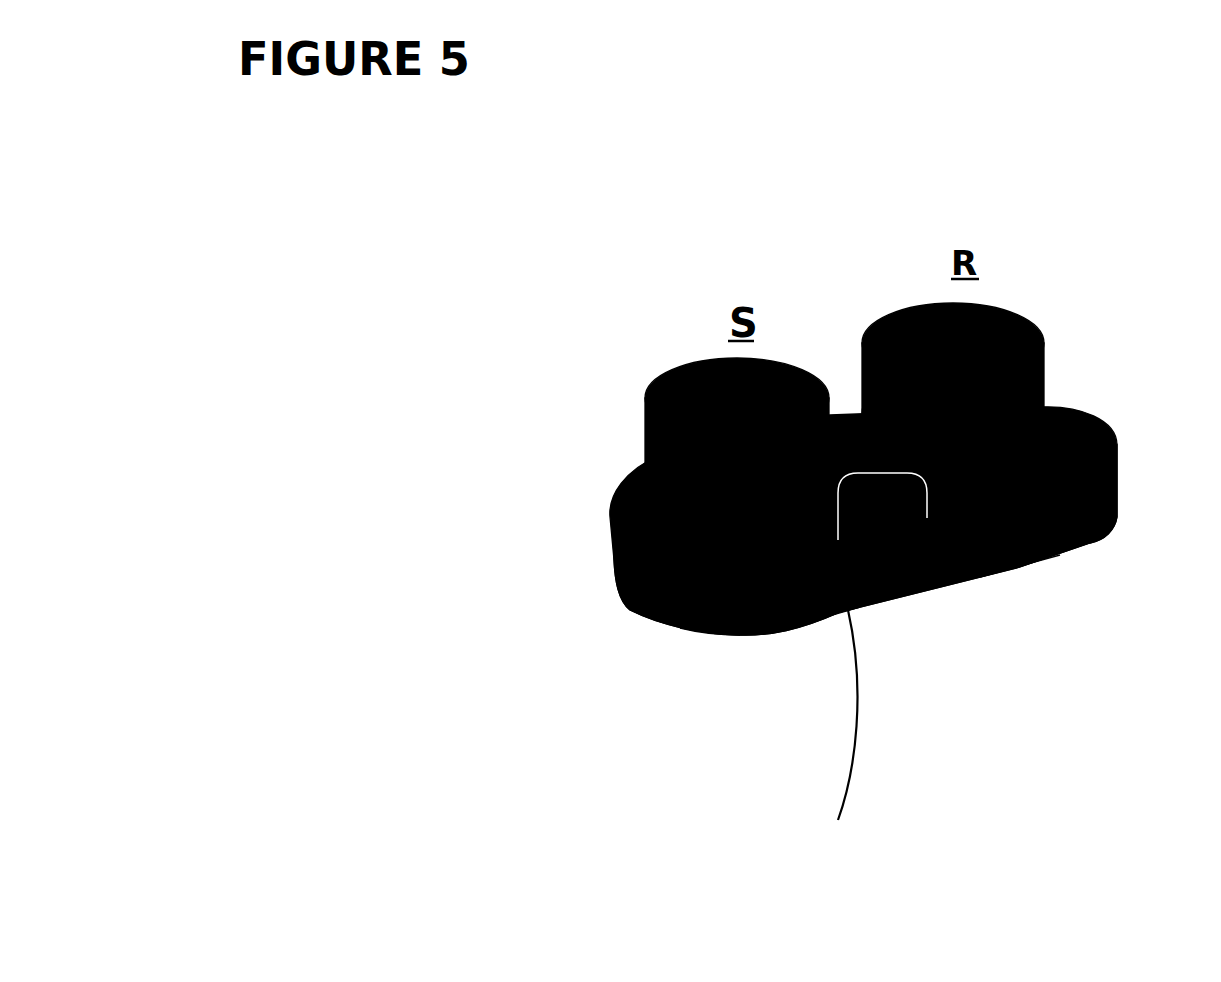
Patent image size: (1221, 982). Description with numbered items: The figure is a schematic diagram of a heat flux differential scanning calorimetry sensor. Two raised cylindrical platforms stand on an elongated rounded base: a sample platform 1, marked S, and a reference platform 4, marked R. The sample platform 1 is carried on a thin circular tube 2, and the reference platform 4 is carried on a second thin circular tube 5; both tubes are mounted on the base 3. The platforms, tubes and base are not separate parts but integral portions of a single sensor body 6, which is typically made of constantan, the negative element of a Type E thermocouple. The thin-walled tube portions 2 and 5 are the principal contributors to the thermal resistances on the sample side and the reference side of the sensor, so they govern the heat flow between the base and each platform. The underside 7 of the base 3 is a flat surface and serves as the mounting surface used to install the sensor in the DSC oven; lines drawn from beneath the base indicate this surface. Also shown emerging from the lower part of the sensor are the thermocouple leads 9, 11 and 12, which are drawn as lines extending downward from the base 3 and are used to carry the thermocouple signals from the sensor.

The sample platform 1 is at (697, 363).
The thin circular tube 2 is at (647, 456).
The base 3 is at (630, 604).
The reference platform 4 is at (1018, 313).
The thin circular tube 5 is at (1043, 390).
The sensor body 6 is at (1091, 552).
The underside 7 is at (795, 625).
The thermocouple lead 9 is at (710, 635).
The thermocouple lead 11 is at (1017, 567).
The thermocouple lead 12 is at (882, 600).